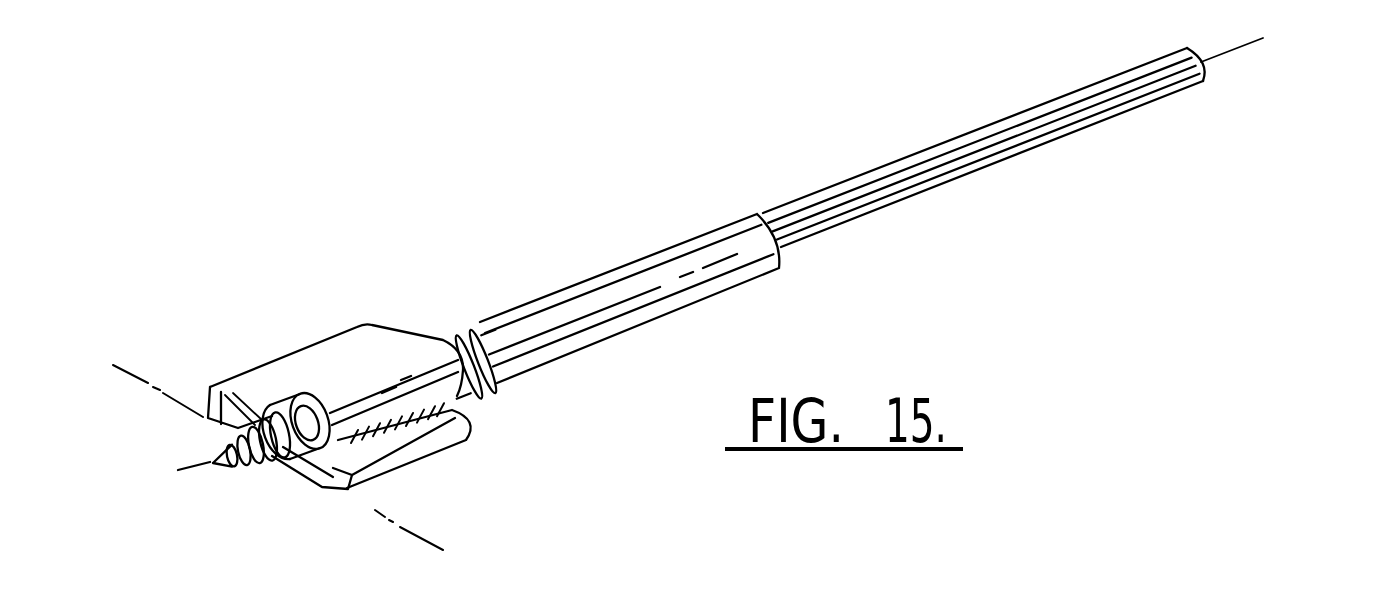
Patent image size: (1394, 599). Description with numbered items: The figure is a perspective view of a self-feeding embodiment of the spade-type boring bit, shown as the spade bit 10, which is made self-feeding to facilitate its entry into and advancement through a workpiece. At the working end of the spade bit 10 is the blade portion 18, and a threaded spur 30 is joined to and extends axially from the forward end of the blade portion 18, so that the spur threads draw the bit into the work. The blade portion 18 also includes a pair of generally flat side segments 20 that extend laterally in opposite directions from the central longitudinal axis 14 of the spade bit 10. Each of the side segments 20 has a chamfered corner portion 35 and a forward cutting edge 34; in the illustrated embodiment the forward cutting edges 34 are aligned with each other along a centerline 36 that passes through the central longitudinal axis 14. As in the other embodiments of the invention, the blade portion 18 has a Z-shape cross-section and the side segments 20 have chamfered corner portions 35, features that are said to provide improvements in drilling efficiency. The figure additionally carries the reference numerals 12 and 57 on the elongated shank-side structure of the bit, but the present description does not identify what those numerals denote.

The spade bit 10 is at (699, 172).
The shaft 12 is at (923, 150).
The central longitudinal axis 14 is at (1237, 53).
The blade portion 18 is at (400, 350).
The side segments 20 is at (280, 367).
The threaded spur 30 is at (250, 463).
The forward cutting edges 34 is at (212, 424).
The chamfered corner portions 35 is at (331, 483).
The centerline 36 is at (142, 372).
The sleeve 57 is at (597, 277).